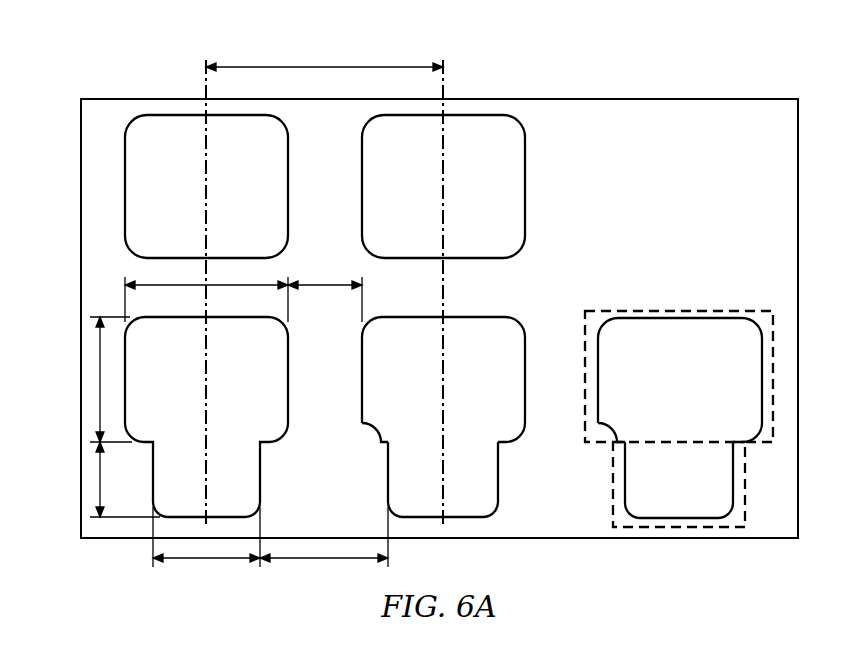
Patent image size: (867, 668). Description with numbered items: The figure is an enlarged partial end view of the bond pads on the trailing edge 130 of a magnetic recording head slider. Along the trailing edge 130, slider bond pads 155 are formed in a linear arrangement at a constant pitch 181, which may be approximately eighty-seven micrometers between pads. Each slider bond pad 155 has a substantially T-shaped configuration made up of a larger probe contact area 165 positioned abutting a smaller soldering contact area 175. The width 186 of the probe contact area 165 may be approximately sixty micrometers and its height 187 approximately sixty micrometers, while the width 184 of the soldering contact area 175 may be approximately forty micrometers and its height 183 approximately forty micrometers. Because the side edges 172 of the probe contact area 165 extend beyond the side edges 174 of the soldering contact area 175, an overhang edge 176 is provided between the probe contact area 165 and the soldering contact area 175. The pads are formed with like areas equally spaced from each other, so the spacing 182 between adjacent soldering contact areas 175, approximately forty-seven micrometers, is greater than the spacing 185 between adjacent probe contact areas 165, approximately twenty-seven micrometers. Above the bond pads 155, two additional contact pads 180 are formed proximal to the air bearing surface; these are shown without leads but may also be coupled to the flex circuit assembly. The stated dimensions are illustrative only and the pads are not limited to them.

The trailing edge 130 is at (95, 192).
The slider bond pad 155 is at (762, 320).
The probe contact area 165 is at (685, 332).
The side edge 172 is at (527, 350).
The side edge 174 is at (388, 480).
The soldering contact area 175 is at (675, 507).
The overhang edge 176 is at (386, 442).
The contact pad 180 is at (163, 128).
The pitch 181 is at (320, 62).
The spacing 182 is at (321, 560).
The height 183 is at (100, 483).
The width 184 is at (196, 560).
The spacing 185 is at (325, 278).
The width 186 is at (150, 286).
The height 187 is at (100, 382).